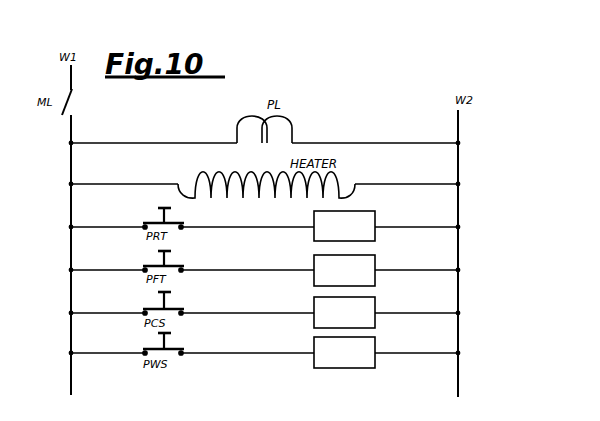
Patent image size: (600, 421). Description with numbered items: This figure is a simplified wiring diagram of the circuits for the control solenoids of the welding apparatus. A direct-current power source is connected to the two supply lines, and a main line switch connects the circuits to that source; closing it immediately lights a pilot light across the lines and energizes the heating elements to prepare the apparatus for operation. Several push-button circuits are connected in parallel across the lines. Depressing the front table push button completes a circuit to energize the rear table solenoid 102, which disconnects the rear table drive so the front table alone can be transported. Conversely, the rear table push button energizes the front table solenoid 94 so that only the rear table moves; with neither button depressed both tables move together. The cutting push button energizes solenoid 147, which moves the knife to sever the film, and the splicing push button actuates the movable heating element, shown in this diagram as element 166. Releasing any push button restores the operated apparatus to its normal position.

The front table solenoid 94 is at (344, 226).
The rear table solenoid 102 is at (344, 270).
The solenoid 147 is at (344, 312).
The relay 166 is at (344, 352).